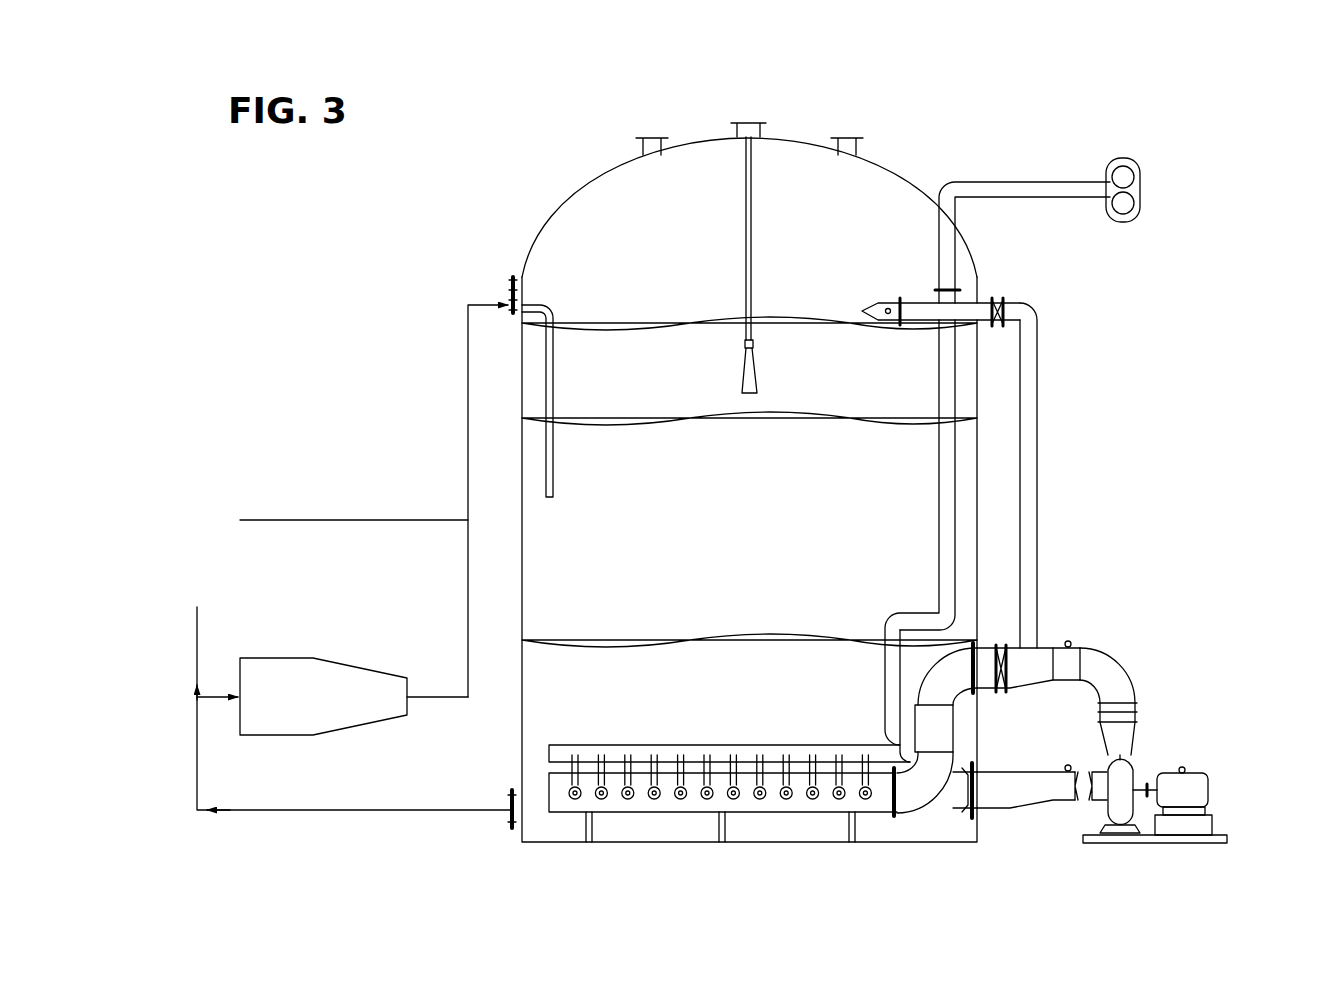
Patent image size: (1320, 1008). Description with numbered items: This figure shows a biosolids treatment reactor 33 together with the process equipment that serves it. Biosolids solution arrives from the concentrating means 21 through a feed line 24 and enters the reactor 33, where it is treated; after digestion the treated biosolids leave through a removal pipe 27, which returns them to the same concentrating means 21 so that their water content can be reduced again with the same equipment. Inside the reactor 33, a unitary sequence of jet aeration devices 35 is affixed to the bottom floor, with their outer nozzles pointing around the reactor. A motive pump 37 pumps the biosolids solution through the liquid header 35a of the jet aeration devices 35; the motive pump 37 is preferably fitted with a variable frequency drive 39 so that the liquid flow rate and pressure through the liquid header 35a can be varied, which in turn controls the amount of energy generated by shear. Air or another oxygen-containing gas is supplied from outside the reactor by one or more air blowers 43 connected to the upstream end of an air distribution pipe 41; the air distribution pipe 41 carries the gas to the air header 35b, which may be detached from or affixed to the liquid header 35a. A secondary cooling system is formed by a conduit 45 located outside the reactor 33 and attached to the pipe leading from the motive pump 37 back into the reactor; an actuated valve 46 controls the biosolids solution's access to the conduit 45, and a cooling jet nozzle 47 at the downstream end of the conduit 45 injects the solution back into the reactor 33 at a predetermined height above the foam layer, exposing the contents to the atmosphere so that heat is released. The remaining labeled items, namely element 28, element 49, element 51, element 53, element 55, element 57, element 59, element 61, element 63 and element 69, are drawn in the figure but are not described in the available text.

The concentrating means 21 is at (332, 668).
The feed line 24 is at (449, 501).
The removal pipe 27 is at (356, 749).
The outlet line 28 is at (354, 491).
The treatment reactor 33 is at (722, 490).
The jet aeration devices 35 is at (723, 832).
The liquid header 35a is at (908, 769).
The air header 35b is at (729, 746).
The motive pump 37 is at (1140, 767).
The variable frequency drive 39 is at (1218, 779).
The air distribution pipe 41 is at (984, 472).
The air blowers 43 is at (1161, 190).
The conduit 45 is at (1068, 475).
The actuated valve 46 is at (1034, 284).
The cooling jet nozzle 47 is at (910, 287).
The spray nozzle 49 is at (789, 366).
The elbow 51 is at (1095, 659).
The middle tray 53 is at (749, 394).
The lower tray 55 is at (749, 615).
The inlet flange 57 is at (470, 386).
The top nozzle 59 is at (625, 105).
The center nozzle with rod 61 is at (724, 198).
The top nozzle 63 is at (819, 105).
The upper tray 69 is at (749, 299).